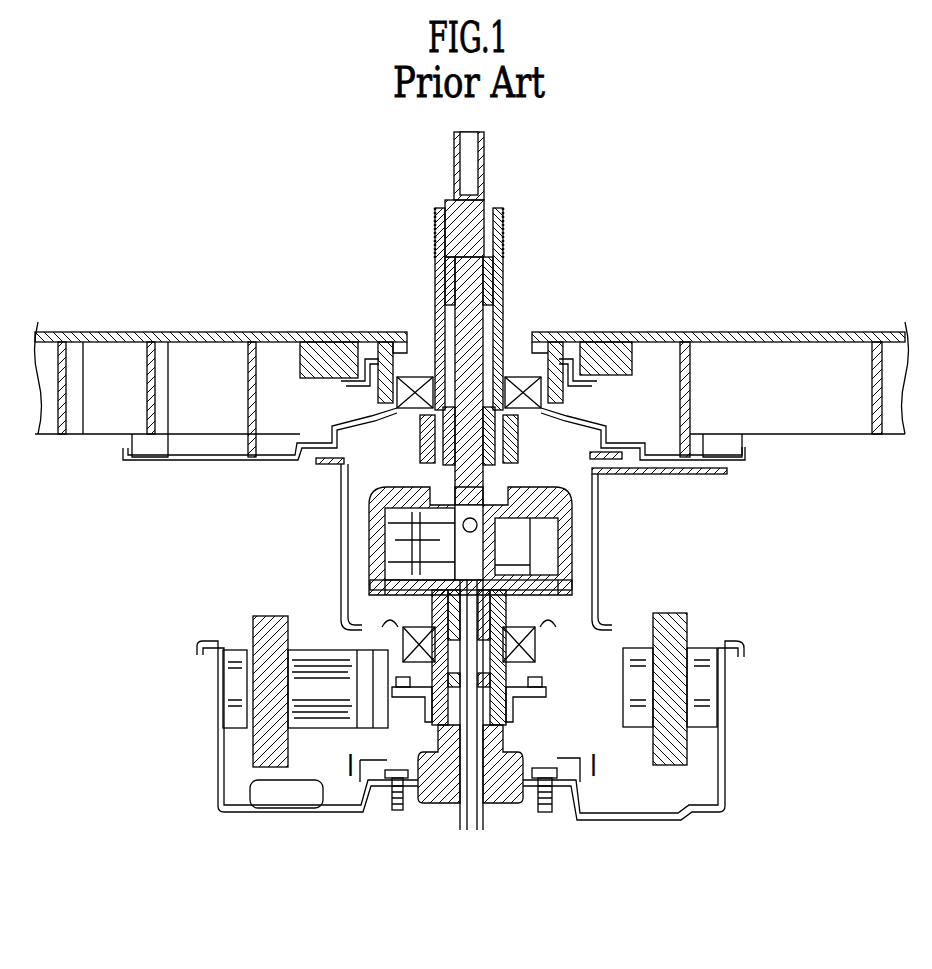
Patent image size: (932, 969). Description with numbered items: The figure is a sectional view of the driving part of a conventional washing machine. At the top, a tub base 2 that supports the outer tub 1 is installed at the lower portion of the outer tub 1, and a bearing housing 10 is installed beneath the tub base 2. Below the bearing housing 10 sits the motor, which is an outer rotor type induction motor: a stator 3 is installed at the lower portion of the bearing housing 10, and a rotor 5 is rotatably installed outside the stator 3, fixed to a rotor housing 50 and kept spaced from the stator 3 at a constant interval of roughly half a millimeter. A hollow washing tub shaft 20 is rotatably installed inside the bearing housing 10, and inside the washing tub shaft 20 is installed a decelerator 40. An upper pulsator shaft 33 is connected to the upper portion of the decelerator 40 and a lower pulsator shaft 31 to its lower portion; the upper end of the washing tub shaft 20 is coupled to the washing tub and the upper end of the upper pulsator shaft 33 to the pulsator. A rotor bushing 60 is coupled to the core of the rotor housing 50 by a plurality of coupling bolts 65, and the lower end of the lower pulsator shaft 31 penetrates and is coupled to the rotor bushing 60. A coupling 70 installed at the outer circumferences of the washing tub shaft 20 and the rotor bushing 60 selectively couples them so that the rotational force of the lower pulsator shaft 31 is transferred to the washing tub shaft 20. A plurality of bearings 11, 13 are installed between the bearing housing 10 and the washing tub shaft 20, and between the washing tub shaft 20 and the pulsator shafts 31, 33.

The outer tub 1 is at (226, 332).
The tub base 2 is at (192, 460).
The stator 3 is at (258, 630).
The rotor 5 is at (235, 684).
The bearing housing 10 is at (612, 552).
The bearing 11 is at (418, 376).
The bearing 13 is at (449, 270).
The washing tub shaft 20 is at (500, 270).
The lower pulsator shaft 31 is at (470, 845).
The upper pulsator shaft 33 is at (470, 215).
The decelerator 40 is at (382, 540).
The rotor housing 50 is at (227, 770).
The rotor bushing 60 is at (518, 752).
The coupling bolt 65 is at (392, 800).
The coupling 70 is at (528, 698).